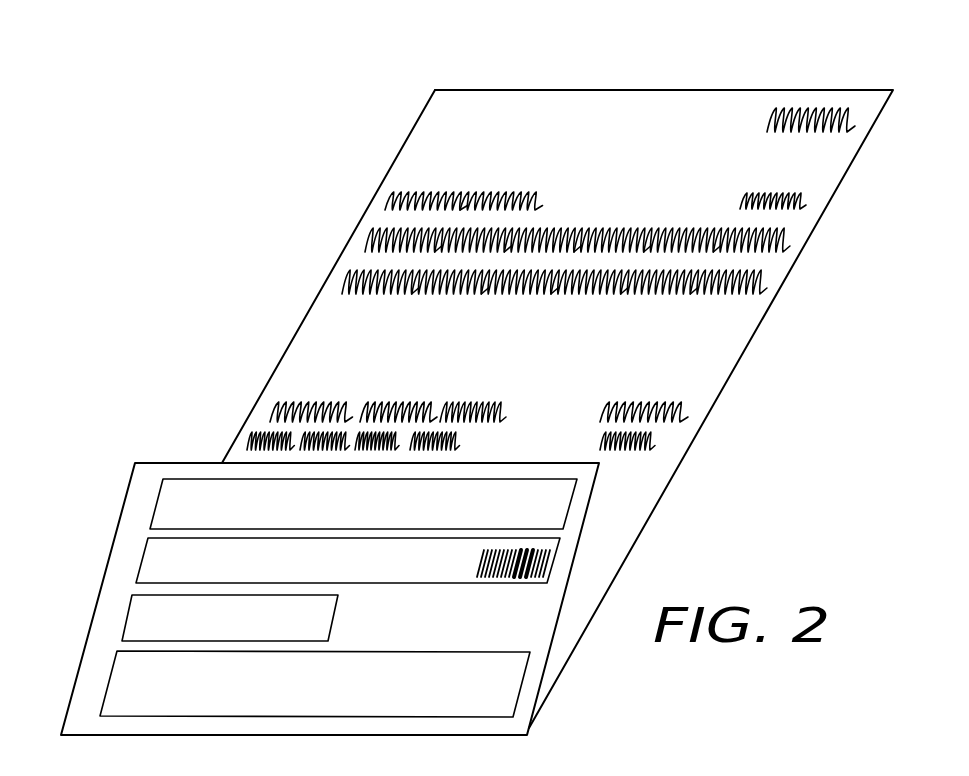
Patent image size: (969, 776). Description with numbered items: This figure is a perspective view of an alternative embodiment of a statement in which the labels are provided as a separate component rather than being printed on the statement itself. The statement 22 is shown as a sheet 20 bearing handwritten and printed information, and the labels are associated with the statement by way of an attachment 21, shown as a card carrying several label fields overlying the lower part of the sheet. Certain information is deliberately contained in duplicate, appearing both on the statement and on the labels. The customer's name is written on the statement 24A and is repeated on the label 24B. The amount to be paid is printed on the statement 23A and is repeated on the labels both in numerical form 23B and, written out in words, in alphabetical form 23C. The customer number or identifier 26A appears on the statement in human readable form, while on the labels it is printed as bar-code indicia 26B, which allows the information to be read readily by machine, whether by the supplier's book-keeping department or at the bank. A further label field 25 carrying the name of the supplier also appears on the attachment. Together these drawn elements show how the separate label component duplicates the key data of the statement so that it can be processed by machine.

The bill form sheet 20 is at (304, 315).
The attachment 21 is at (125, 492).
The statement 22 is at (438, 87).
The amount to be paid on the statement 23A is at (725, 215).
The amount in numerical form on the labels 23B is at (303, 622).
The amount in alphabetical form on the labels 23C is at (255, 695).
The customer's name on the statement 24A is at (436, 112).
The customer's name on the labels 24B is at (148, 558).
The payee name box 25 is at (200, 493).
The customer number or identifier 26A is at (829, 125).
The bar-code indicia 26B is at (547, 565).